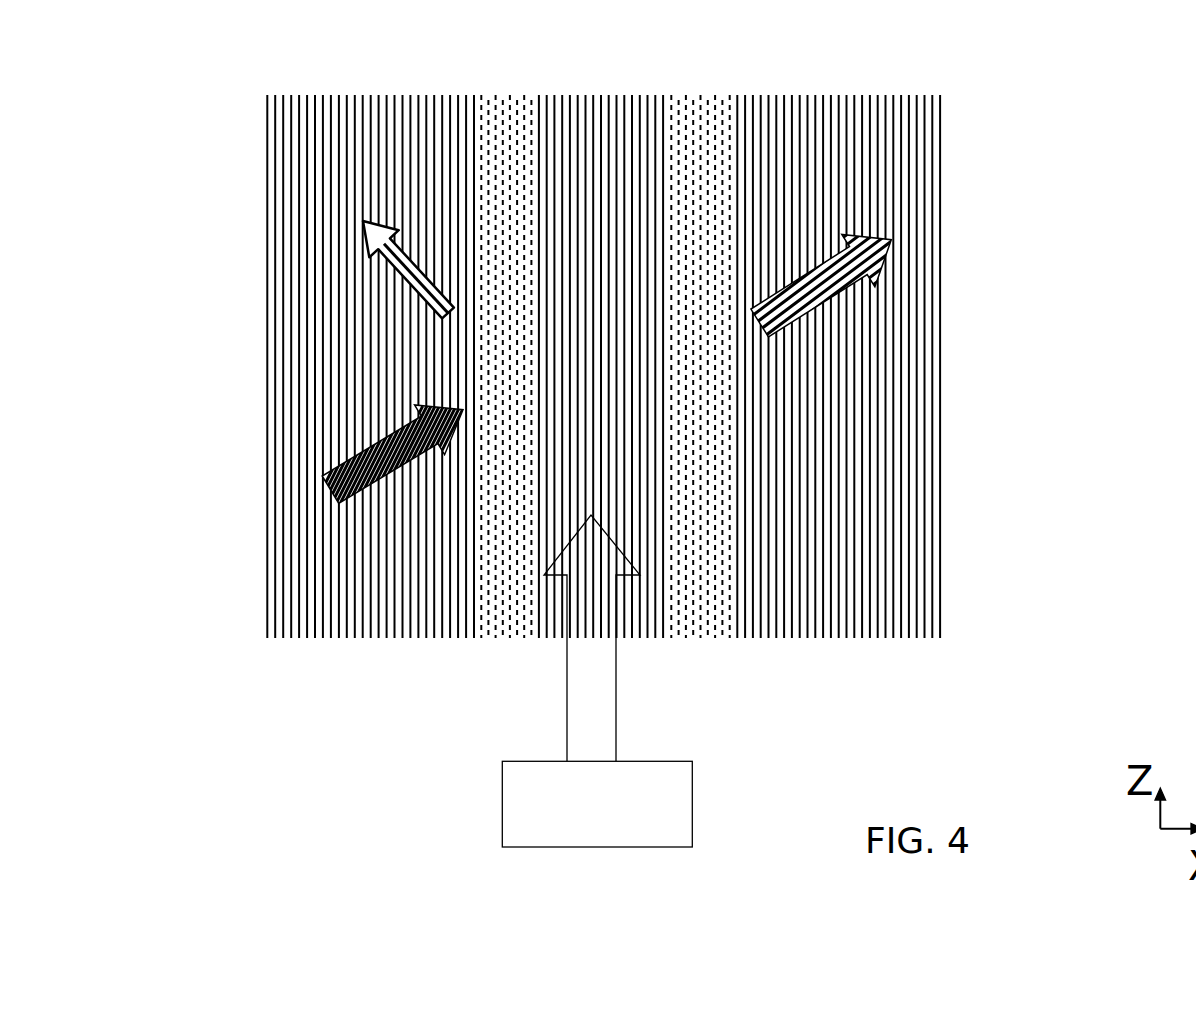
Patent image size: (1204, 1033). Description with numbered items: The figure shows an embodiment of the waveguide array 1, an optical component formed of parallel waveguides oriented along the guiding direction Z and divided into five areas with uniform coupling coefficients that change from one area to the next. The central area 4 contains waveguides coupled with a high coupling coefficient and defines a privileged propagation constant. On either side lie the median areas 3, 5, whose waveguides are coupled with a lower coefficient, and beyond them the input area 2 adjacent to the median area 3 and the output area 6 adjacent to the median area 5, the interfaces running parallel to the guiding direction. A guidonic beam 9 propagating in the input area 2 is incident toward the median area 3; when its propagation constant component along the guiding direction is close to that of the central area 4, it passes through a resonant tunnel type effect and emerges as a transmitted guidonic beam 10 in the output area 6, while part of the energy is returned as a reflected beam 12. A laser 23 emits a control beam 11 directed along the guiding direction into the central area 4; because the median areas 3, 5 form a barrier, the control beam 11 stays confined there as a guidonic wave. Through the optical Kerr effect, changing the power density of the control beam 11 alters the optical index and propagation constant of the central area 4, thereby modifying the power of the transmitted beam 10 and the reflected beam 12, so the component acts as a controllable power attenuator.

The waveguide array 1 is at (210, 652).
The input area 2 is at (287, 136).
The median area 3 is at (483, 93).
The central area 4 is at (558, 103).
The median area 5 is at (705, 612).
The output area 6 is at (873, 612).
The guidonic beam 9 is at (343, 448).
The transmitted guidonic beam 10 is at (810, 298).
The control beam 11 is at (580, 677).
The reflected beam 12 is at (383, 257).
The laser 23 is at (527, 805).